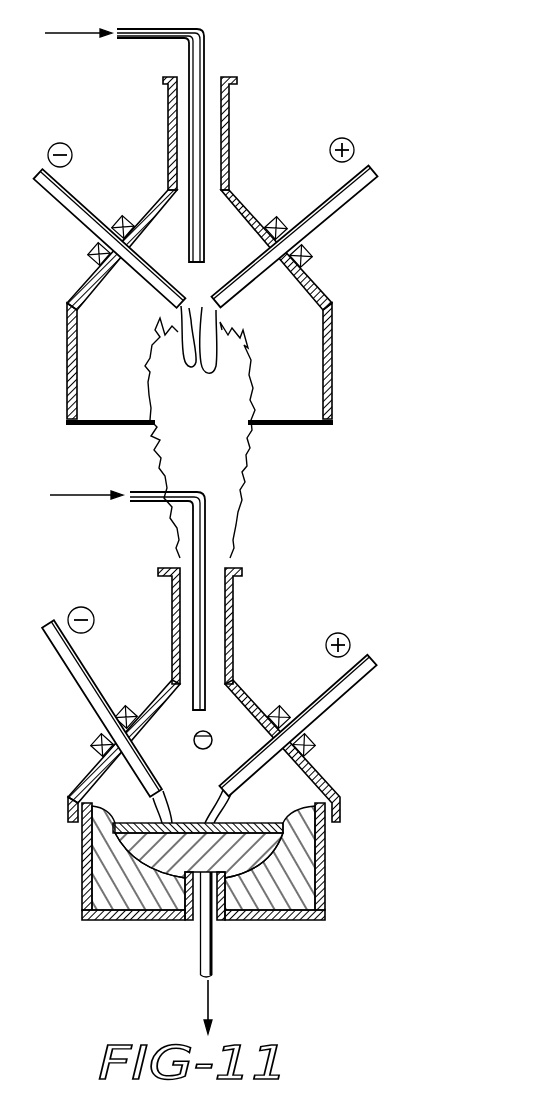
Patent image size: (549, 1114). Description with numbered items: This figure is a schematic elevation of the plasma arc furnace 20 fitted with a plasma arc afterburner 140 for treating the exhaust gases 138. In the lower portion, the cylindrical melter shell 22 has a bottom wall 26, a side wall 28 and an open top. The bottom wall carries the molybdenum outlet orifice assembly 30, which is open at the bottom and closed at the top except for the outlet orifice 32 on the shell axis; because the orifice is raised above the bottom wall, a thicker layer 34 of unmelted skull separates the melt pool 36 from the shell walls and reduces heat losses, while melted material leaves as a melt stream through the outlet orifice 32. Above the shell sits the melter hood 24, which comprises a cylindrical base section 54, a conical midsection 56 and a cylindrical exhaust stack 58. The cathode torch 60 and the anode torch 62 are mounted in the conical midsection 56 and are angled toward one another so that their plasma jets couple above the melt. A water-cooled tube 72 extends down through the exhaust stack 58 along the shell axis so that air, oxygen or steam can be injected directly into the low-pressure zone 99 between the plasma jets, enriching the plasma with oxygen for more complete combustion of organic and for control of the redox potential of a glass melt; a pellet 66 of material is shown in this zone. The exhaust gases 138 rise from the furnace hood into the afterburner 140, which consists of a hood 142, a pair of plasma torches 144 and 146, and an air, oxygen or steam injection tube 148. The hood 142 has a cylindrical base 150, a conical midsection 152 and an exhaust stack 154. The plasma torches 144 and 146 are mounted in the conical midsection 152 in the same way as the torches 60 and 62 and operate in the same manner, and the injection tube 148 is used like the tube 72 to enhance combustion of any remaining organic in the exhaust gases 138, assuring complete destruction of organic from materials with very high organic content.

The plasma arc furnace 20 is at (276, 603).
The melter shell 22 is at (326, 868).
The melter hood 24 is at (338, 788).
The bottom wall 26 is at (282, 921).
The side wall 28 is at (84, 860).
The outlet orifice assembly 30 is at (190, 921).
The outlet orifice 32 is at (227, 878).
The layer of unmelted skull 34 is at (140, 895).
The melt pool 36 is at (253, 861).
The cylindrical base section 54 is at (69, 806).
The conical midsection 56 is at (77, 784).
The exhaust stack 58 is at (172, 646).
The cathode torch 60 is at (72, 676).
The anode torch 62 is at (343, 697).
The feed pellet 66 is at (212, 734).
The water-cooled tube 72 is at (206, 537).
The low-pressure zone 99 is at (203, 779).
The exhaust gases 138 is at (228, 447).
The plasma arc afterburner 140 is at (283, 132).
The hood 142 is at (325, 277).
The plasma torch 144 is at (68, 222).
The plasma torch 146 is at (335, 216).
The air, oxygen or steam injection tube 148 is at (205, 40).
The cylindrical base 150 is at (334, 356).
The conical midsection 152 is at (250, 212).
The exhaust stack 154 is at (233, 108).